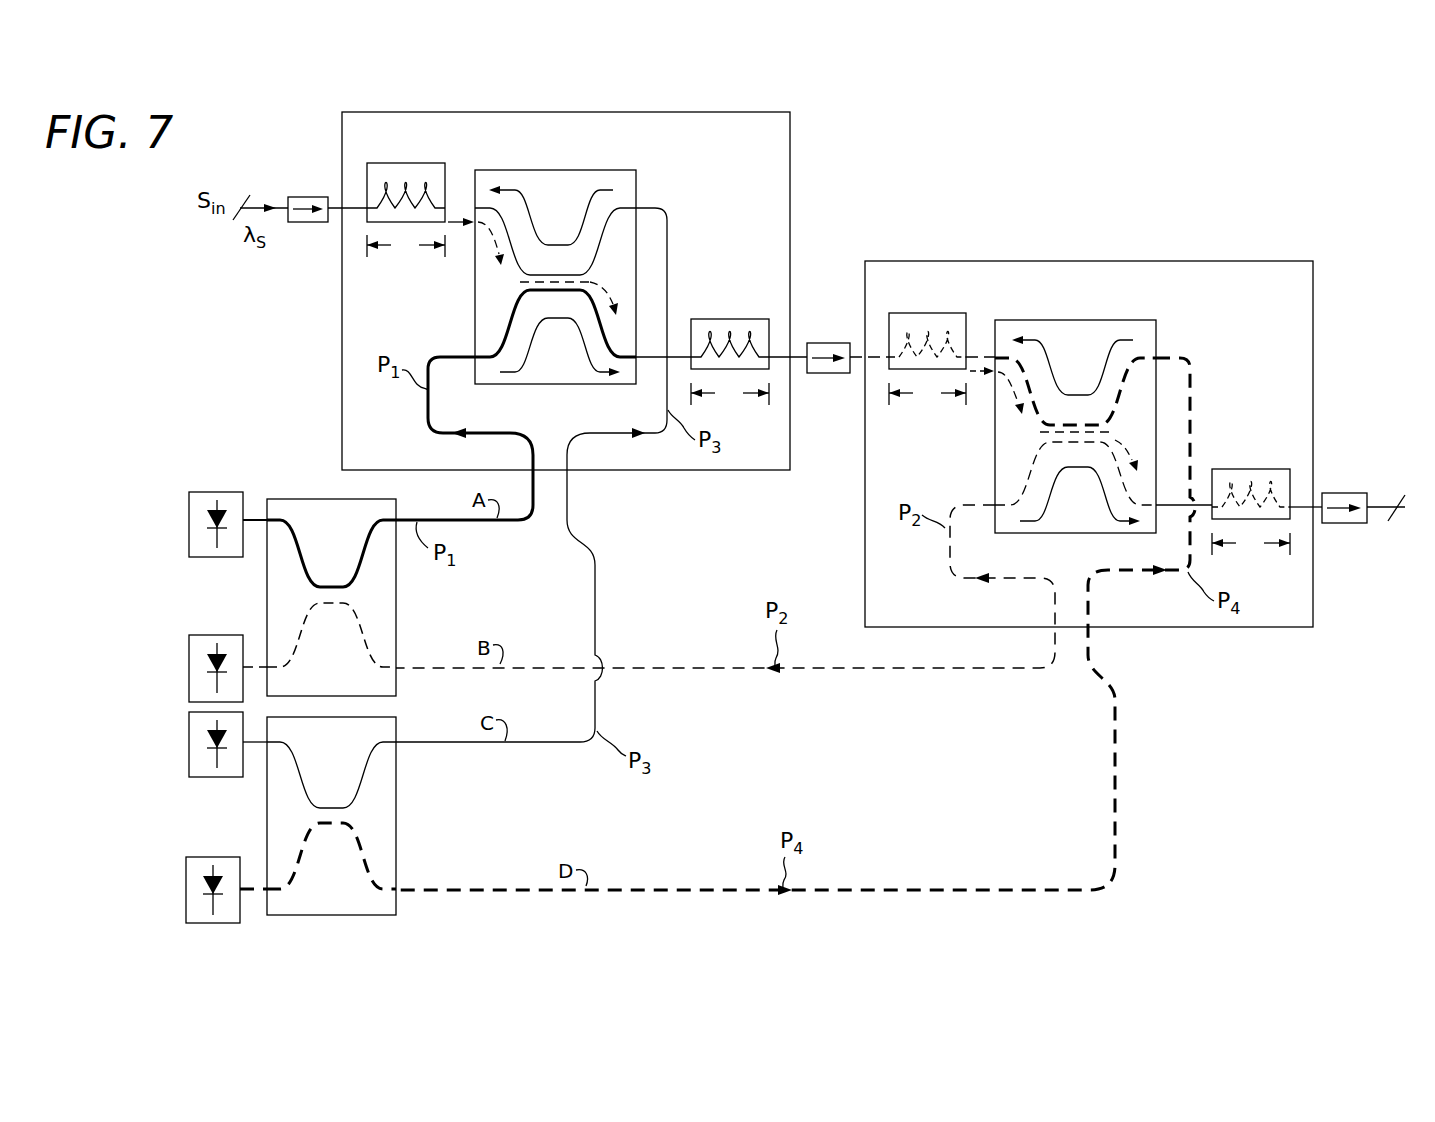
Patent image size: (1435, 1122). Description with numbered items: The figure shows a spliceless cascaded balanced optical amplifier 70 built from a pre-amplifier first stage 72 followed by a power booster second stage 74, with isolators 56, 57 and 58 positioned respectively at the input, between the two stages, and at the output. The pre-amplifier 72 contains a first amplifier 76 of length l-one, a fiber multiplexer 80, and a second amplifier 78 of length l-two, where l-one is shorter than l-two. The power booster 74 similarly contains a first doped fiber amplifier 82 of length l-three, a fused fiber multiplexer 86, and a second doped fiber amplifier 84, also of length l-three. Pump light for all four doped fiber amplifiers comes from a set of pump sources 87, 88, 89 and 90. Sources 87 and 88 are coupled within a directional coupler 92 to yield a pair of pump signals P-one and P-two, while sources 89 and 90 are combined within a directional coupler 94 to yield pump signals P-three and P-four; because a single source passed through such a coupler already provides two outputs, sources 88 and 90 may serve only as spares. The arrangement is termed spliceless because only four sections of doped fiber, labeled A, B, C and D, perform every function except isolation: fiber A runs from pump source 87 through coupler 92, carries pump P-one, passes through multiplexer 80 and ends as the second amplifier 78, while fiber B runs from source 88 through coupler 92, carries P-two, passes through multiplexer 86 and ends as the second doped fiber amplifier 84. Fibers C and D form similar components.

The isolator 56 is at (318, 197).
The isolator 57 is at (832, 342).
The isolator 58 is at (1348, 492).
The cascaded balanced optical amplifier 70 is at (211, 279).
The pre-amplifier first stage 72 is at (792, 145).
The power booster second stage 74 is at (1315, 300).
The first amplifier 76 is at (416, 162).
The second amplifier 78 is at (730, 318).
The fiber multiplexer 80 is at (474, 306).
The first doped fiber amplifier 82 is at (938, 312).
The second doped fiber amplifier 84 is at (1250, 468).
The fused fiber multiplexer 86 is at (994, 448).
The pump source 87 is at (230, 491).
The pump source 88 is at (232, 634).
The pump source 89 is at (233, 778).
The pump source 90 is at (232, 856).
The directional coupler 92 is at (296, 498).
The directional coupler 94 is at (397, 817).